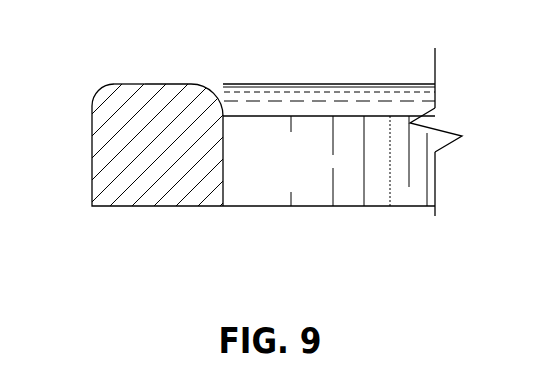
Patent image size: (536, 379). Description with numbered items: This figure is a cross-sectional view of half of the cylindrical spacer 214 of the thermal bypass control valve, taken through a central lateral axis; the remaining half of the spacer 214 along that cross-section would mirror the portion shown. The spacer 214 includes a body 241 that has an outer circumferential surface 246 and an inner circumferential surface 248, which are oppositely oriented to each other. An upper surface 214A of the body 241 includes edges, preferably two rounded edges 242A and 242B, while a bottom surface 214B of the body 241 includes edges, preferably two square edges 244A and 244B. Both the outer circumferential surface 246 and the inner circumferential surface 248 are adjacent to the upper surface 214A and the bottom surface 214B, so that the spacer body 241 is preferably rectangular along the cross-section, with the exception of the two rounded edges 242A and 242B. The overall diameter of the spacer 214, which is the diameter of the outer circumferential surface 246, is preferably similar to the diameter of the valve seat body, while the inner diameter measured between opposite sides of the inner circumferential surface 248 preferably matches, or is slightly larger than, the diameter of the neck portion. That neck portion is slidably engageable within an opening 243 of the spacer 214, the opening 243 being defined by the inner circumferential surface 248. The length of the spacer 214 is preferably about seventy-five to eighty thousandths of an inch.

The spacer 214 is at (68, 107).
The upper surface 214A is at (143, 83).
The bottom surface 214B is at (152, 207).
The body 241 is at (90, 91).
The rounded edge 242A is at (102, 88).
The rounded edge 242B is at (222, 85).
The opening 243 is at (381, 117).
The square edge 244A is at (91, 207).
The square edge 244B is at (223, 207).
The outer circumferential surface 246 is at (91, 162).
The inner circumferential surface 248 is at (295, 205).